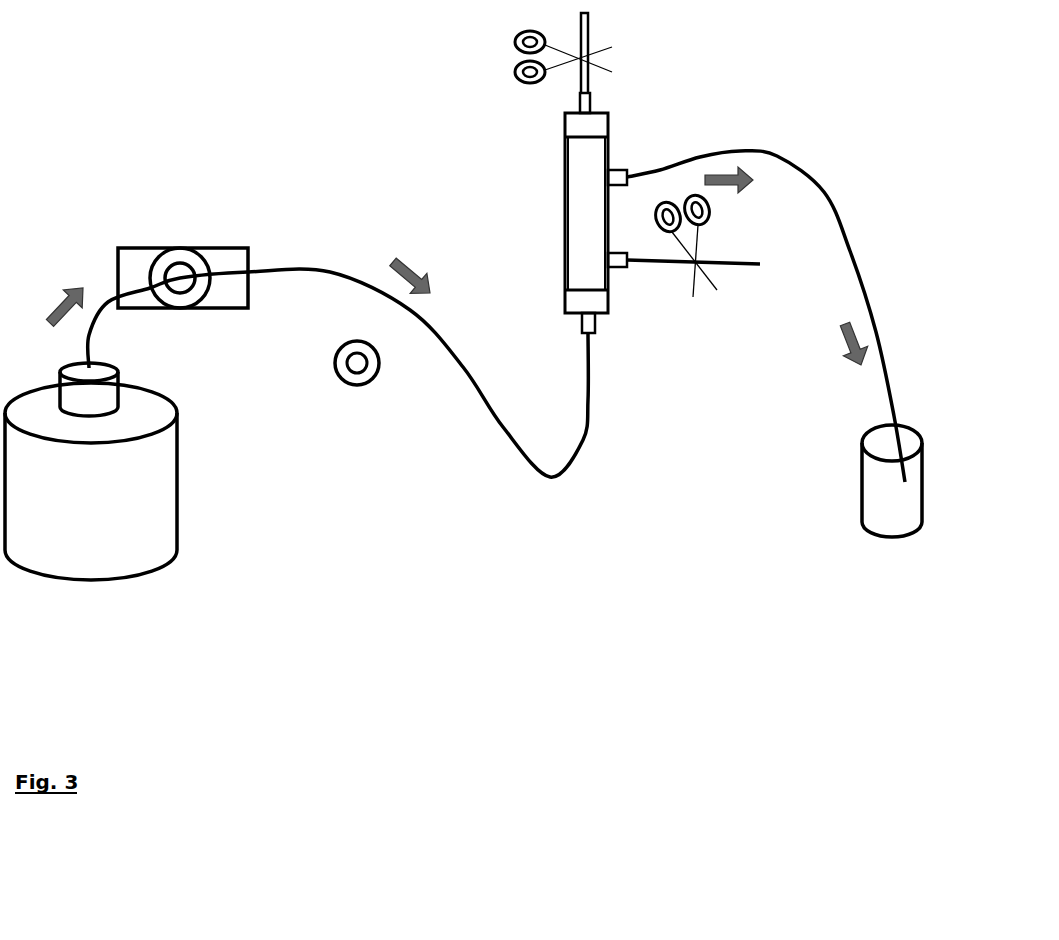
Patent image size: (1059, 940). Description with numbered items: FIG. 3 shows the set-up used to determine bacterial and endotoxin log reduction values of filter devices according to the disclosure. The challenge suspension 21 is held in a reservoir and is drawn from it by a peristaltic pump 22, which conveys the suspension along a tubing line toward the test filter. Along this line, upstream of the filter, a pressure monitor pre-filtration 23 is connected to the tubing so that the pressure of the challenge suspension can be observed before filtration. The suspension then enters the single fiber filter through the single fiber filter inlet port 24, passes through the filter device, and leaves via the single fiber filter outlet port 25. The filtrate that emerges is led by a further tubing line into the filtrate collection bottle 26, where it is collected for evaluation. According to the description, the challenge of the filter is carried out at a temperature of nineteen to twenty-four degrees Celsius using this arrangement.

The challenge suspension 21 is at (91, 492).
The peristaltic pump 22 is at (183, 259).
The pressure monitor pre-filtration 23 is at (357, 284).
The single fiber filter inlet port 24 is at (585, 179).
The single fiber filter outlet port 25 is at (616, 164).
The filtrate collection bottle 26 is at (892, 509).